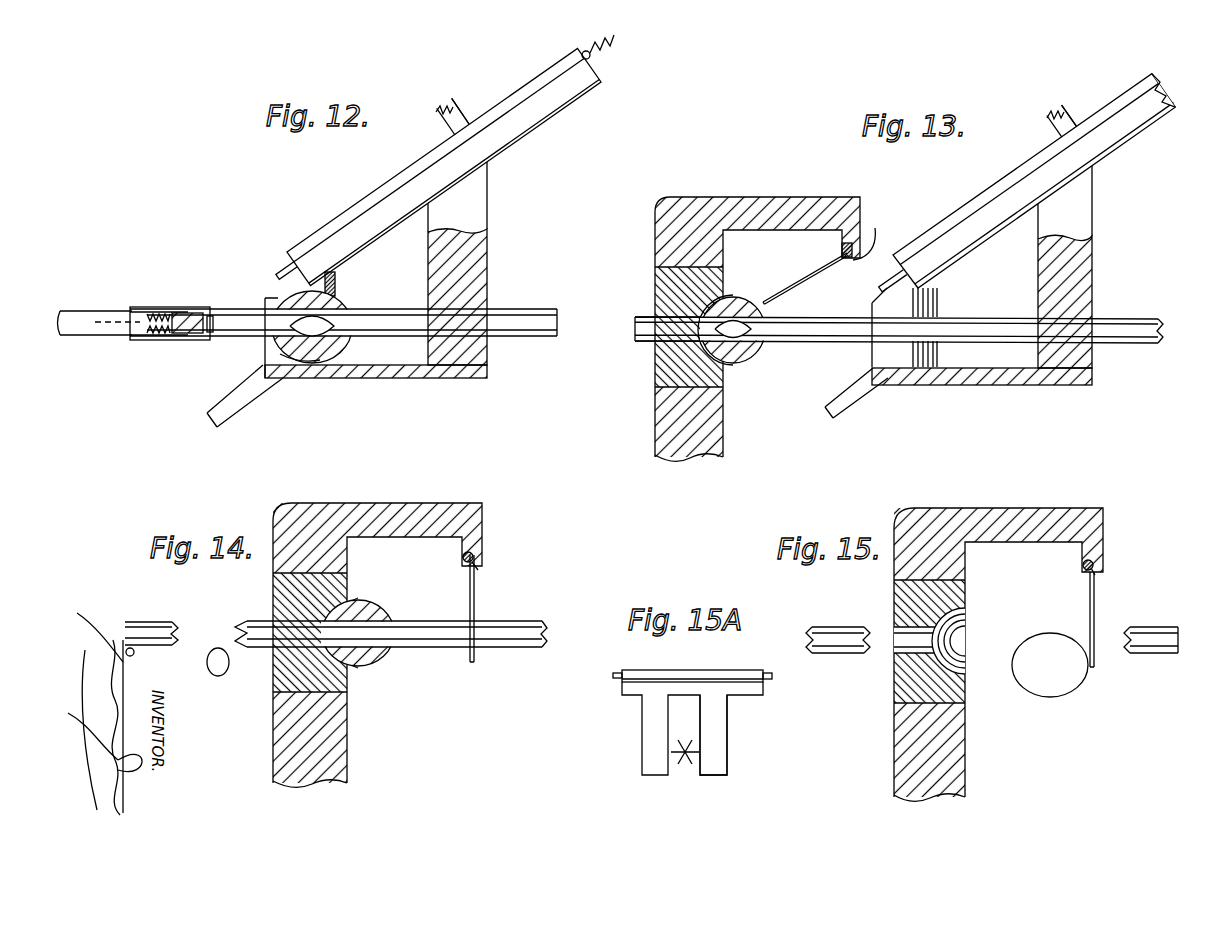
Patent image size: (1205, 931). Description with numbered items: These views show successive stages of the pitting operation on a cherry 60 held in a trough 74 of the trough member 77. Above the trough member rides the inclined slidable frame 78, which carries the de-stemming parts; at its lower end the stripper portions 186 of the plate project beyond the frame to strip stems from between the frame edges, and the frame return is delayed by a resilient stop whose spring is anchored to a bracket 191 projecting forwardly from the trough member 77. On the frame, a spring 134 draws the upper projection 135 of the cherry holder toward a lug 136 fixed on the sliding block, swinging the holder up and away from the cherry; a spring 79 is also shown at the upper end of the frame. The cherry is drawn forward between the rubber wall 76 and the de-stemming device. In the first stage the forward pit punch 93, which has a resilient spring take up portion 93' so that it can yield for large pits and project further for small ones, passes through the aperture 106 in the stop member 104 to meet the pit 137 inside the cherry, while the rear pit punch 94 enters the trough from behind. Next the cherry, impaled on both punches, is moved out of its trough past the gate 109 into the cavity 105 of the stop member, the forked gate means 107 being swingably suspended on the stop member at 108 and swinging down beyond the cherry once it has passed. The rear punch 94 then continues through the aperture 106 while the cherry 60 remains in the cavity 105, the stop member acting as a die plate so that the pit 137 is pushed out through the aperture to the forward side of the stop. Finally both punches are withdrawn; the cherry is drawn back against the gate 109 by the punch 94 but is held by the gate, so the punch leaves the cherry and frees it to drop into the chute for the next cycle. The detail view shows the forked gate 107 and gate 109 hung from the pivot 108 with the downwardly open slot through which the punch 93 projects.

In FIG. 12, the cherry 60 is at (336, 297).
In FIG. 13, the cherry 60 is at (733, 302).
In FIG. 14, the cherry 60 is at (376, 607).
In FIG. 15, the cherry 60 is at (1050, 688).
In FIG. 12, the trough 74 is at (387, 355).
In FIG. 13, the trough 74 is at (988, 361).
In FIG. 12, the rubber wall 76 is at (280, 292).
In FIG. 13, the rubber wall 76 is at (938, 300).
In FIG. 12, the trough member 77 is at (473, 246).
In FIG. 13, the trough member 77 is at (1080, 252).
In FIG. 12, the slidable frame 78 is at (345, 212).
In FIG. 13, the slidable frame 78 is at (1125, 141).
In FIG. 12, the spring 79 is at (596, 56).
In FIG. 12, the pit punch 93 is at (144, 353).
In FIG. 13, the pit punch 93 is at (654, 354).
In FIG. 14, the pit punch 93 is at (154, 617).
In FIG. 15, the pit punch 93 is at (838, 624).
In FIG. 15A, the pit punch 93 is at (688, 774).
In FIG. 12, the resilient spring take up portion 93' is at (171, 299).
In FIG. 12, the pit punch 94 is at (500, 311).
In FIG. 13, the pit punch 94 is at (1130, 335).
In FIG. 14, the pit punch 94 is at (439, 638).
In FIG. 15, the pit punch 94 is at (1148, 648).
In FIG. 13, the stop member 104 is at (720, 431).
In FIG. 14, the stop member 104 is at (340, 747).
In FIG. 15, the stop member 104 is at (966, 559).
In FIG. 13, the cavity 105 is at (728, 362).
In FIG. 14, the cavity 105 is at (348, 600).
In FIG. 15, the cavity 105 is at (963, 617).
In FIG. 15, the aperture 106 is at (902, 643).
In FIG. 13, the forked gate means 107 is at (788, 291).
In FIG. 14, the forked gate means 107 is at (476, 599).
In FIG. 15, the forked gate means 107 is at (1095, 607).
In FIG. 15A, the forked gate means 107 is at (675, 712).
In FIG. 13, the gate pivot 108 is at (842, 249).
In FIG. 14, the gate pivot 108 is at (463, 558).
In FIG. 15, the gate pivot 108 is at (1083, 566).
In FIG. 15A, the gate pivot 108 is at (767, 683).
In FIG. 13, the gate 109 is at (874, 234).
In FIG. 14, the gate 109 is at (478, 570).
In FIG. 15, the gate 109 is at (1096, 576).
In FIG. 15A, the gate 109 is at (718, 735).
In FIG. 12, the spring 134 is at (444, 106).
In FIG. 13, the spring 134 is at (1054, 110).
In FIG. 12, the upper projection 135 is at (443, 128).
In FIG. 13, the upper projection 135 is at (1058, 124).
In FIG. 12, the lug 136 is at (457, 98).
In FIG. 13, the lug 136 is at (1073, 103).
In FIG. 12, the pit 137 is at (280, 355).
In FIG. 14, the pit 137 is at (223, 677).
In FIG. 12, the stripper portion 186 is at (273, 262).
In FIG. 13, the stripper portion 186 is at (881, 286).
In FIG. 12, the bracket 191 is at (238, 404).
In FIG. 13, the bracket 191 is at (852, 399).